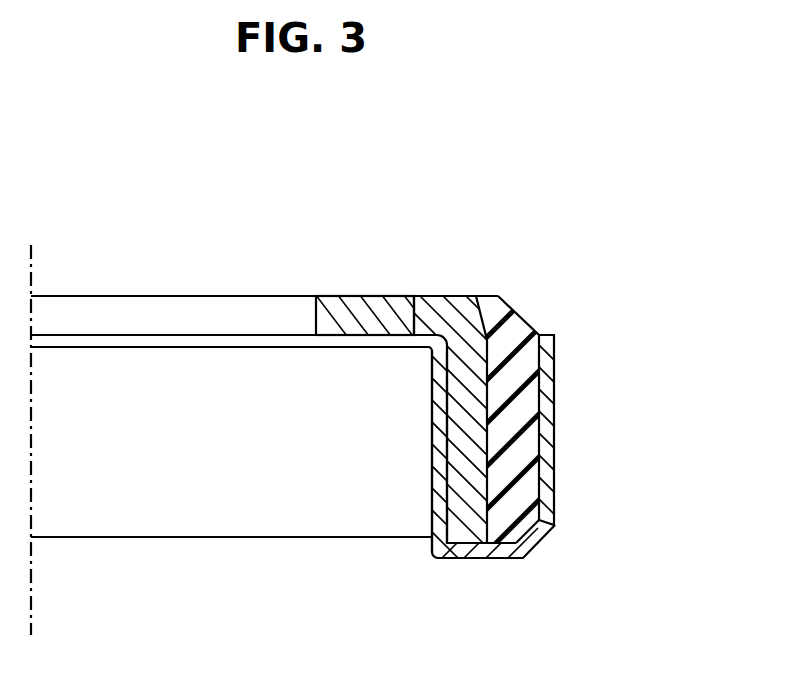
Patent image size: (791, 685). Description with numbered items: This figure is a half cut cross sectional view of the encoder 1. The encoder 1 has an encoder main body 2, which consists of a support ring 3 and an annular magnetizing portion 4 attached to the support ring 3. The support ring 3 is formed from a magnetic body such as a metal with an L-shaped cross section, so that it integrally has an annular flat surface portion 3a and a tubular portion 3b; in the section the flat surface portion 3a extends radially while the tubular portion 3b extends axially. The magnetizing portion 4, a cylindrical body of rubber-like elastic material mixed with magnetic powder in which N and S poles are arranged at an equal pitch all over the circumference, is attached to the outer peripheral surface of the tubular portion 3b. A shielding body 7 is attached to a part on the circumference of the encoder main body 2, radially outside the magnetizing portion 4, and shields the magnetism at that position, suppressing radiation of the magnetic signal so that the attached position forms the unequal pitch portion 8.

The encoder 1 is at (88, 233).
The encoder main body 2 is at (478, 308).
The support ring 3 is at (428, 307).
The annular flat surface portion 3a is at (368, 312).
The tubular portion 3b is at (455, 528).
The magnetizing portion 4 is at (507, 330).
The shielding body 7 is at (548, 412).
The unequal pitch portion 8 is at (557, 478).